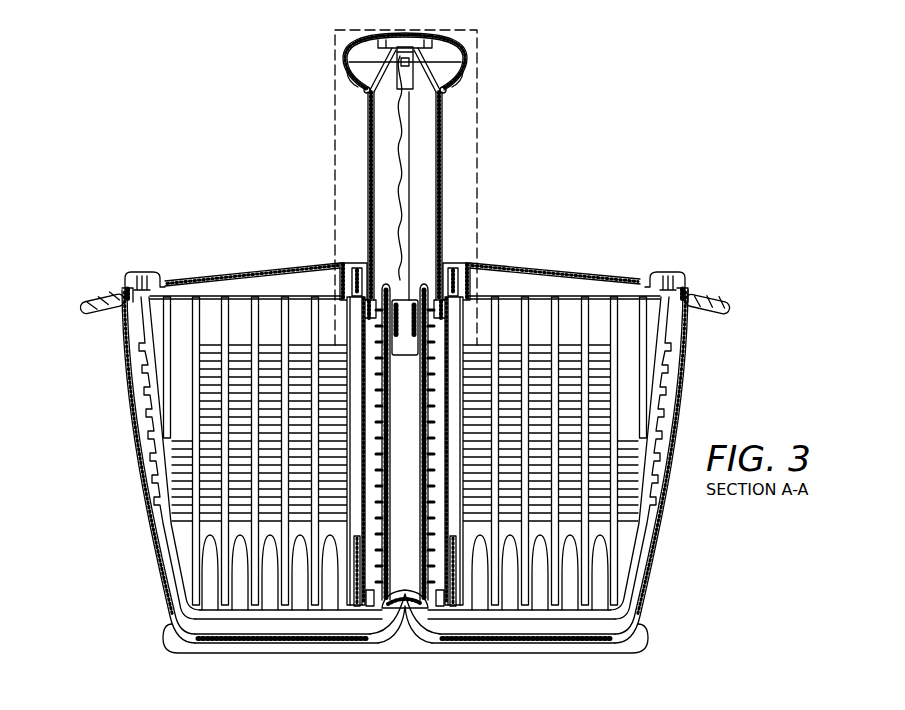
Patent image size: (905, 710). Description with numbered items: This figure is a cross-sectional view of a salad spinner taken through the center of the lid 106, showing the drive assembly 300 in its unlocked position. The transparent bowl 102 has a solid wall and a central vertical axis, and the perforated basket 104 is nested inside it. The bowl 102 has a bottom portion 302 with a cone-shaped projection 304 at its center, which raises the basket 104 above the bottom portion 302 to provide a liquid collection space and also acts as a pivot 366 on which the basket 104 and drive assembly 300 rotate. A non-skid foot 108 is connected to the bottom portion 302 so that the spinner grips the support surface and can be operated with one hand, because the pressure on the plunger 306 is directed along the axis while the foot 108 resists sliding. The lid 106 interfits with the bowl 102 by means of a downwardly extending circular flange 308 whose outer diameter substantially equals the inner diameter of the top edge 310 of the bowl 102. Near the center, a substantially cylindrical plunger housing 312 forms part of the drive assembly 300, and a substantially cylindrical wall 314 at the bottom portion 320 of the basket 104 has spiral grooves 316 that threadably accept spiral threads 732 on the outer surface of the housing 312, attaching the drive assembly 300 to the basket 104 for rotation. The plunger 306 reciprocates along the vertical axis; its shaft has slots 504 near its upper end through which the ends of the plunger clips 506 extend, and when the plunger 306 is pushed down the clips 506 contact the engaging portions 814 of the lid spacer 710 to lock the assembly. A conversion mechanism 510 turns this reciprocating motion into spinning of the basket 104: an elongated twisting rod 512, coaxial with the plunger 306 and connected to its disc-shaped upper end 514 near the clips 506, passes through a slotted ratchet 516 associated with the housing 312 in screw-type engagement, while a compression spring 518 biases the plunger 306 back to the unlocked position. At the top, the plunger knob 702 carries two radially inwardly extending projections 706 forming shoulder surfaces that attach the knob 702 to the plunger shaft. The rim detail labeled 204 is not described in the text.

The bowl 102 is at (687, 376).
The basket 104 is at (667, 425).
The lid 106 is at (560, 272).
The non-skid foot 108 is at (642, 640).
The lid rim clip 204 is at (138, 280).
The drive assembly 300 is at (446, 30).
The bottom portion 302 is at (588, 645).
The cone-shaped projection 304 is at (405, 646).
The plunger 306 is at (348, 42).
The circular flange 308 is at (128, 312).
The top edge 310 is at (100, 300).
The plunger housing 312 is at (347, 481).
The cylindrical wall 314 is at (362, 565).
The spiral grooves 316 is at (356, 583).
The bottom portion 320 is at (490, 616).
The pivot 366 is at (430, 598).
The slots 504 is at (372, 96).
The plunger clips 506 is at (366, 91).
The conversion mechanism 510 is at (420, 215).
The twisting rod 512 is at (391, 185).
The upper end 514 is at (348, 78).
The ratchet 516 is at (346, 290).
The compression spring 518 is at (434, 524).
The plunger knob 702 is at (458, 48).
The projections 706 is at (430, 56).
The lid spacer 710 is at (447, 270).
The spiral threads 732 is at (455, 585).
The engaging portions 814 is at (366, 276).